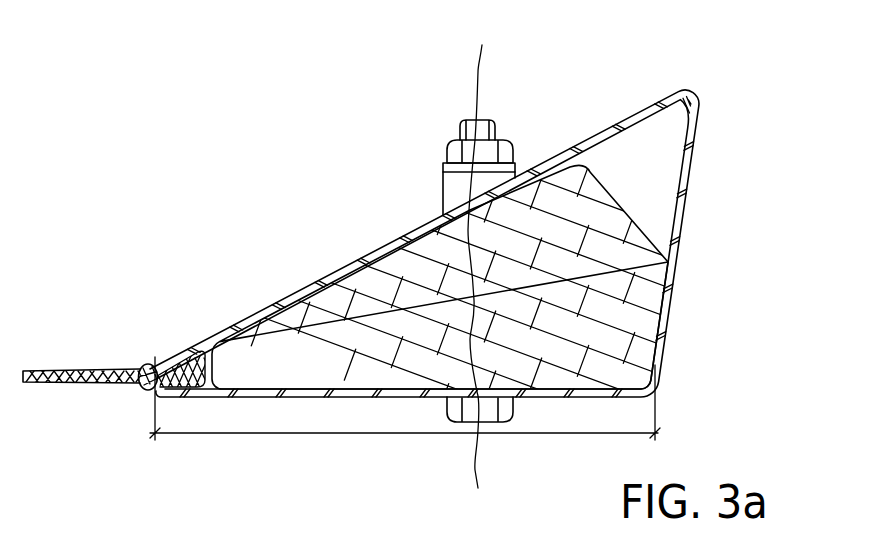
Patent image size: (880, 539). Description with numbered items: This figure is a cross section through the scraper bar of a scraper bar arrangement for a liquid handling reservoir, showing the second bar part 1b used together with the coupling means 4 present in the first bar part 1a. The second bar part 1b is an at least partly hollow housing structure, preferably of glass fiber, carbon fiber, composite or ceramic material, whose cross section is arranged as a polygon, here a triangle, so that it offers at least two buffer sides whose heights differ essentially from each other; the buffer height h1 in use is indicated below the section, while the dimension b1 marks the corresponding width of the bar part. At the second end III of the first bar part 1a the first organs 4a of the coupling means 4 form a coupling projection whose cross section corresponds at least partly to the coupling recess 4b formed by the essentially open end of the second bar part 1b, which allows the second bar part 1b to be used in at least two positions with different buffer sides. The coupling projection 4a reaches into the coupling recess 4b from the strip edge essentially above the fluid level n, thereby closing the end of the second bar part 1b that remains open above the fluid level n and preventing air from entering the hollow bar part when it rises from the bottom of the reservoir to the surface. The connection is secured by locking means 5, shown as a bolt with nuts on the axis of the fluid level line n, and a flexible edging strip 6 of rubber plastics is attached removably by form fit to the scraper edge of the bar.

The first bar part 1a is at (498, 248).
The second bar part 1b is at (688, 217).
The second end of the first bar part III is at (625, 322).
The coupling means 4 is at (514, 239).
The first organs of the coupling means (coupling projection) 4a is at (616, 358).
The coupling recess 4b is at (647, 176).
The locking means 5 is at (520, 152).
The flexible edging strip 6 is at (72, 370).
The fluid level n is at (478, 68).
The buffer height h1 is at (266, 434).
The width dimension b1 is at (393, 398).